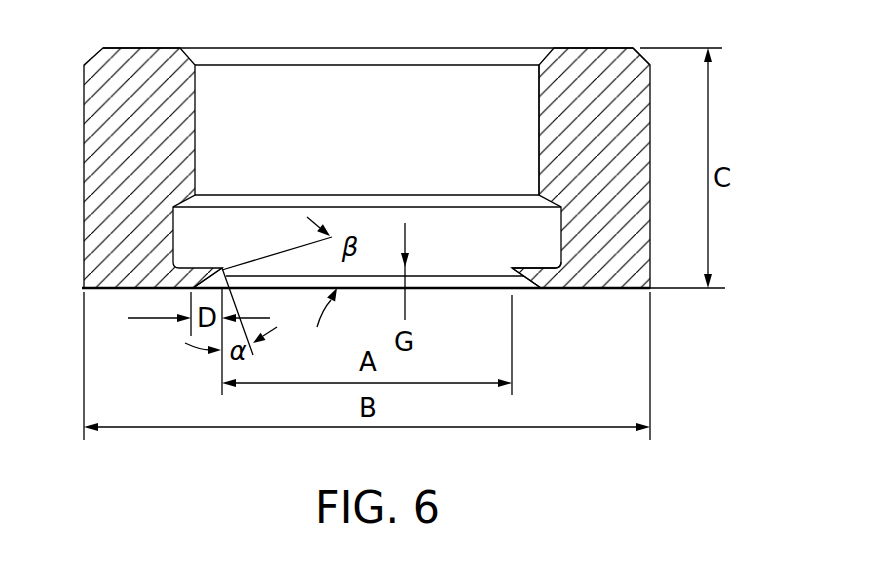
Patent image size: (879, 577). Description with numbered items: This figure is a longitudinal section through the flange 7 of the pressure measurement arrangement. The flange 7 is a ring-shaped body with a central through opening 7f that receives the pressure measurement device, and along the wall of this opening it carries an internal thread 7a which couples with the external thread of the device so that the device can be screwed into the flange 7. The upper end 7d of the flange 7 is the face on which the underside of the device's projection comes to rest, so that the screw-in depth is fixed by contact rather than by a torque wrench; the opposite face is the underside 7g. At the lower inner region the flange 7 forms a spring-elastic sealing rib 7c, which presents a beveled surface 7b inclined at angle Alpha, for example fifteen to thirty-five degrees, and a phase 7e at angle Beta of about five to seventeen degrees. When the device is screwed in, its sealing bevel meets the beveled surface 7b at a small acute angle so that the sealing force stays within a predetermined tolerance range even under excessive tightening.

The flange 7 is at (650, 237).
The internal thread 7a is at (540, 122).
The beveled surface 7b is at (513, 268).
The sealing rib 7c is at (552, 278).
The upper end 7d is at (605, 48).
The phase 7e is at (523, 290).
The through opening 7f is at (410, 87).
The underside 7g is at (618, 289).